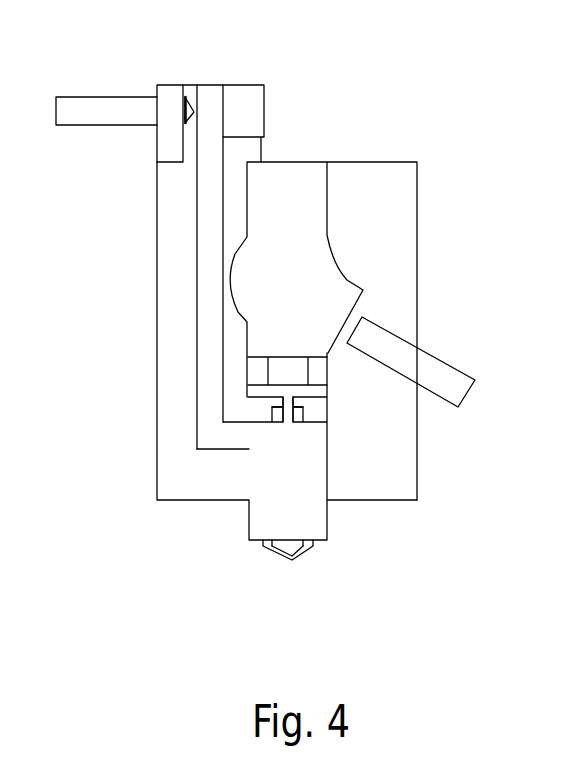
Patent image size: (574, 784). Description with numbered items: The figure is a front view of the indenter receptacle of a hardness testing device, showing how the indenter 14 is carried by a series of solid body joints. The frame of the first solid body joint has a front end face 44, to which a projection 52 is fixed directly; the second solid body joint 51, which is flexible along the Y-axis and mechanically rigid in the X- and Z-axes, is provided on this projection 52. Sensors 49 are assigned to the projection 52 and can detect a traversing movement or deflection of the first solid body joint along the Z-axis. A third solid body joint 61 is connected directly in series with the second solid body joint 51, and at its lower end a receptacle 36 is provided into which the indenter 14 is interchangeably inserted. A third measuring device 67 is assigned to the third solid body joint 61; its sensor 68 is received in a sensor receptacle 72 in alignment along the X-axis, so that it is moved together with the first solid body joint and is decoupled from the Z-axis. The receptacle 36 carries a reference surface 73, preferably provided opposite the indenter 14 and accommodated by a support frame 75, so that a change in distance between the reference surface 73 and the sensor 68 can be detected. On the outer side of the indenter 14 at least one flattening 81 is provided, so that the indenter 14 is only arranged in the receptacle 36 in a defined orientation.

The indenter 14 is at (310, 557).
The receptacle 36 is at (295, 587).
The front end face 44 is at (172, 398).
The sensors 49 is at (455, 382).
The second solid body joint 51 is at (340, 377).
The projection 52 is at (325, 268).
The third solid body joint 61 is at (313, 413).
The third measuring device 67 is at (137, 104).
The sensor 68 is at (85, 112).
The sensor receptacle 72 is at (170, 95).
The reference surface 73 is at (195, 110).
The support frame 75 is at (208, 308).
The flattening 81 is at (295, 546).